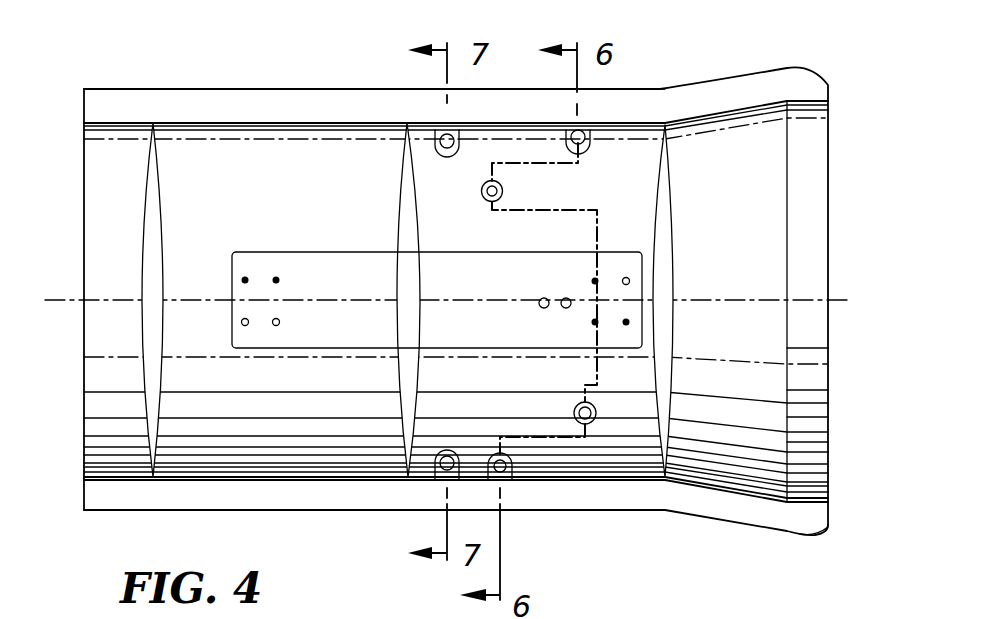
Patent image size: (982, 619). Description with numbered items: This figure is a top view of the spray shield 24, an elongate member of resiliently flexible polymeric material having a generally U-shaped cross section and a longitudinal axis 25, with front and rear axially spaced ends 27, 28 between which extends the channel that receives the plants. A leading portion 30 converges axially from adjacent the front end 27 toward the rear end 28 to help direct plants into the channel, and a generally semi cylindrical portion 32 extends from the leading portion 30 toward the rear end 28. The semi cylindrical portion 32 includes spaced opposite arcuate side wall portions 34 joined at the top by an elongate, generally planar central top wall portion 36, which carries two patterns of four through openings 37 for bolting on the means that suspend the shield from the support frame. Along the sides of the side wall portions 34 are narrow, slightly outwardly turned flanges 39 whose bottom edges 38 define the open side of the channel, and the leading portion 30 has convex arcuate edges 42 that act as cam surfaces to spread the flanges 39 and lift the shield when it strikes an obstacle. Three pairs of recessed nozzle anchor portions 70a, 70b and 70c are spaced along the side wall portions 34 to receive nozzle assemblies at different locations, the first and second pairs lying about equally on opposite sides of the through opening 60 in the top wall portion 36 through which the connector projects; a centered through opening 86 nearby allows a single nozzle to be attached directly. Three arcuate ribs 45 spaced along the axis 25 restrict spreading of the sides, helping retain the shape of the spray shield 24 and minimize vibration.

The spray shield 24 is at (705, 84).
The longitudinal axis 25 is at (848, 300).
The front end 27 is at (830, 417).
The rear end 28 is at (84, 357).
The leading portion 30 is at (741, 427).
The generally semi cylindrical portion 32 is at (246, 179).
The side wall portions 34 is at (630, 198).
The central top wall portion 36 is at (333, 252).
The through openings 37 is at (276, 278).
The bottom edges 38 is at (633, 92).
The flanges 39 is at (228, 103).
The convex arcuate edges 42 is at (816, 538).
The arcuate ribs 45 is at (158, 216).
The through opening 60 is at (543, 309).
The nozzle anchor portion 70a is at (483, 199).
The nozzle anchor portion 70b is at (592, 143).
The nozzle anchor portion 70c is at (452, 158).
The centered through opening 86 is at (565, 297).